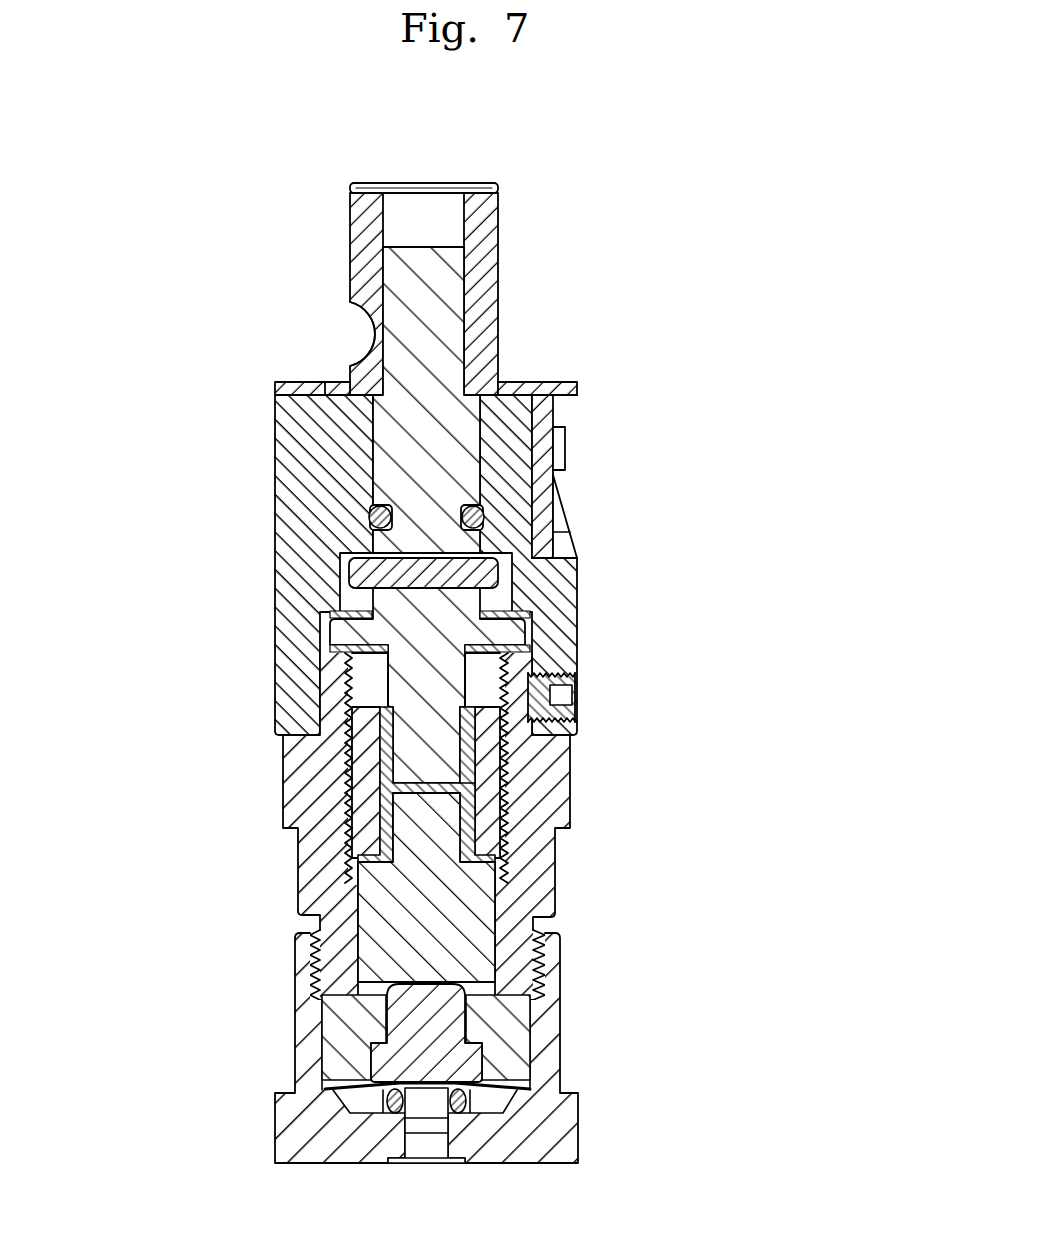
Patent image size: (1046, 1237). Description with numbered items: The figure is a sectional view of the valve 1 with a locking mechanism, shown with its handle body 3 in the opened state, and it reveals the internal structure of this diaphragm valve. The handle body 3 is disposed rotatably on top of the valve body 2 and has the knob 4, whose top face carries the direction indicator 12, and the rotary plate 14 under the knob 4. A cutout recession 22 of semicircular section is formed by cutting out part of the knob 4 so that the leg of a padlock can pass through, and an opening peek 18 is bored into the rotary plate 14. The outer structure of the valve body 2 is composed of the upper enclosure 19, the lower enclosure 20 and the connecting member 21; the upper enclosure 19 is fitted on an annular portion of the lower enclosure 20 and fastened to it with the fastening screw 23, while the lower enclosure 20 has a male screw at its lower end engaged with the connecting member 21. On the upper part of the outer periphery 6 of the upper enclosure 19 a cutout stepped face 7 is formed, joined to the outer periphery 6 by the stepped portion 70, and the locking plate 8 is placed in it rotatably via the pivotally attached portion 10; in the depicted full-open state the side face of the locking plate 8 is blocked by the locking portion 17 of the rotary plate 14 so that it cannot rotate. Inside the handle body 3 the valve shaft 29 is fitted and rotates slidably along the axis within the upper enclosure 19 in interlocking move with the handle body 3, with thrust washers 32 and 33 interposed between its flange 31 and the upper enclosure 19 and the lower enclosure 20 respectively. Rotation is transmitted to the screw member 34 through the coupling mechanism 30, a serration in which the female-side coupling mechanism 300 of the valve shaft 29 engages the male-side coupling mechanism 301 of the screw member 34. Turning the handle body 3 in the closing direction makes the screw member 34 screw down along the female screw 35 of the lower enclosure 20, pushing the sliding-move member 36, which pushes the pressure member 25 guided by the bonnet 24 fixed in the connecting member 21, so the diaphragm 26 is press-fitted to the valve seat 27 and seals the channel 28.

The valve with a locking mechanism 1 is at (664, 169).
The valve body 2 is at (668, 660).
The handle body 3 is at (346, 206).
The knob 4 is at (492, 207).
The outer periphery 6 is at (273, 420).
The cutout stepped face 7 is at (538, 492).
The locking plate 8 is at (566, 432).
The pivotally attached portion 10 is at (560, 452).
The direction indicator 12 is at (437, 190).
The rotary plate 14 is at (533, 392).
The locking portion 17 is at (553, 407).
The opening peek 18 is at (348, 380).
The upper enclosure 19 is at (293, 474).
The lower enclosure 20 is at (297, 785).
The connecting member 21 is at (290, 1110).
The cutout recession 22 is at (371, 328).
The fastening screw 23 is at (570, 696).
The bonnet 24 is at (330, 1010).
The pressure member 25 is at (447, 1052).
The diaphragm 26 is at (472, 1085).
The valve seat 27 is at (462, 1098).
The channel 28 is at (420, 1150).
The valve shaft 29 is at (410, 468).
The coupling mechanism 30 is at (374, 790).
The flange 31 is at (340, 630).
The thrust washer 32 is at (335, 596).
The thrust washer 33 is at (337, 653).
The screw member 34 is at (345, 740).
The female screw 35 is at (510, 848).
The sliding-move member 36 is at (460, 888).
The stepped portion 70 is at (568, 540).
The female-side coupling mechanism 300 is at (415, 790).
The male-side coupling mechanism 301 is at (458, 765).